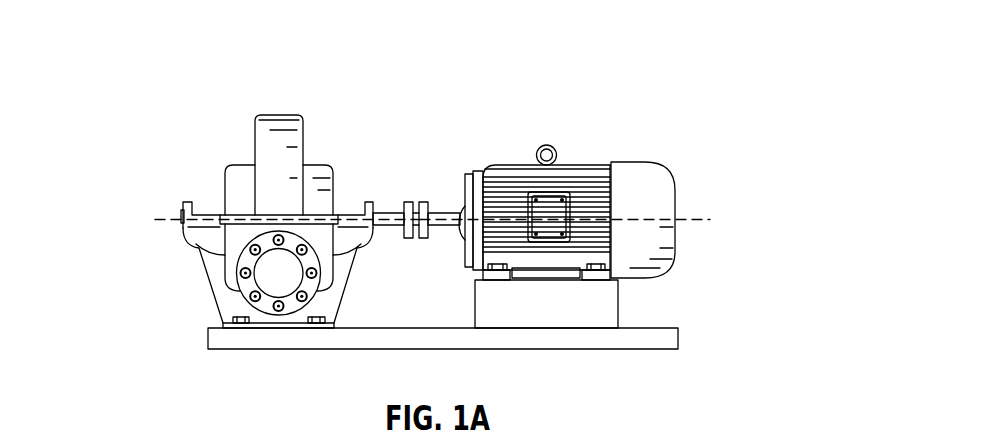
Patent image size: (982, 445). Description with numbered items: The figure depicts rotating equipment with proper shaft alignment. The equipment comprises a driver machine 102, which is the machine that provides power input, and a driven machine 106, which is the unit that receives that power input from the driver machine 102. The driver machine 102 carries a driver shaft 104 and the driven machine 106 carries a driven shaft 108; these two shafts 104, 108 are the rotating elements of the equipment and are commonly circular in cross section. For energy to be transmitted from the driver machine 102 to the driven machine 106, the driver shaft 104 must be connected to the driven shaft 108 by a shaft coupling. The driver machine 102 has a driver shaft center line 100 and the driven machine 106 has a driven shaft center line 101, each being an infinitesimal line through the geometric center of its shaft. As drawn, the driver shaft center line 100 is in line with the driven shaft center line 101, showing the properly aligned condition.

The driver shaft center line 100 is at (702, 218).
The driven shaft center line 101 is at (163, 219).
The driver machine 102 is at (675, 237).
The driver shaft 104 is at (440, 207).
The driven machine 106 is at (193, 243).
The driven shaft 108 is at (390, 208).